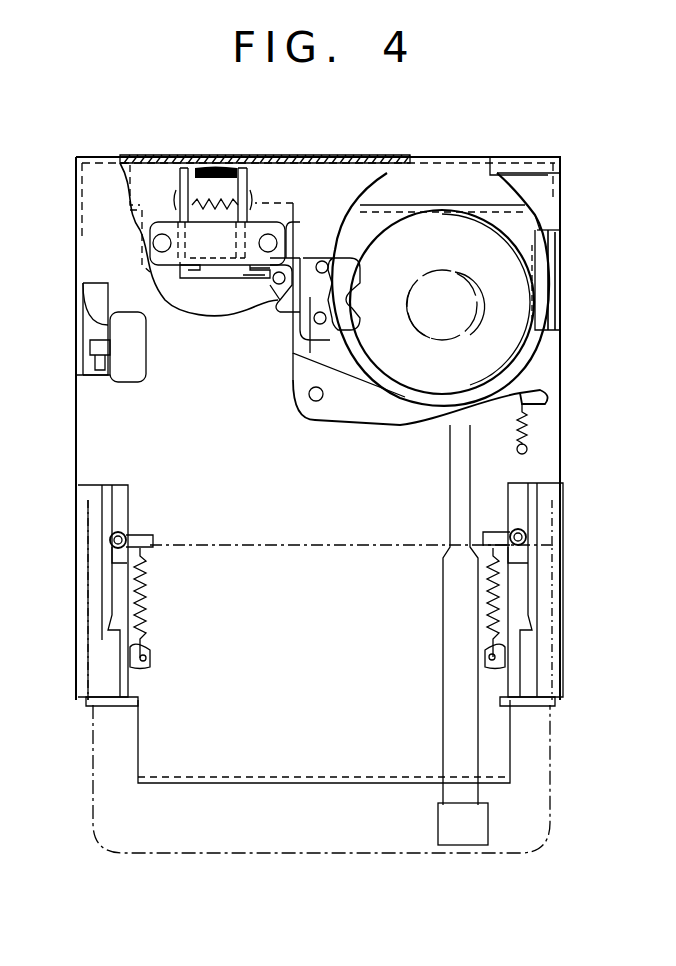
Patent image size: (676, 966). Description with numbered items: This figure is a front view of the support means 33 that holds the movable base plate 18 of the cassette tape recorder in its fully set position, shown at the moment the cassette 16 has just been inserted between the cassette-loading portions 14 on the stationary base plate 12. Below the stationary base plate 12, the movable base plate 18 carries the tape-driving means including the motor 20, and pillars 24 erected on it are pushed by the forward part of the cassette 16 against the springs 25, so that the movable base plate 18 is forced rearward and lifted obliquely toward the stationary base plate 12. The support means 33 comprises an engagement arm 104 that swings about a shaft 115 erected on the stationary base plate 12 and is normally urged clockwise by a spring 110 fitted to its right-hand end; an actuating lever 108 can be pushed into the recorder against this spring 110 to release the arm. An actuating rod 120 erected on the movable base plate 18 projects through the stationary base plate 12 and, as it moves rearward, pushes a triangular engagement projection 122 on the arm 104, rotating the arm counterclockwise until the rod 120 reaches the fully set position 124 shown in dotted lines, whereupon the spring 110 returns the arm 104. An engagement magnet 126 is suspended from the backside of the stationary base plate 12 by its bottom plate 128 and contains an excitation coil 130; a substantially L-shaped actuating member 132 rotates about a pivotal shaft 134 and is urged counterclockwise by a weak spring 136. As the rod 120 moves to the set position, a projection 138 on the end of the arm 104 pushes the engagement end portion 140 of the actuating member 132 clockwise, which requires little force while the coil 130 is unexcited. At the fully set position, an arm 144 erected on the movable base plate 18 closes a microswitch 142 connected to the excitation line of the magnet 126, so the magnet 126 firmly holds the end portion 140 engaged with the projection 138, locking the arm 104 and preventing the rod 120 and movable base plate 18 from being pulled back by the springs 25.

The stationary base plate 12 is at (556, 385).
The cassette-loading portions 14 is at (85, 603).
The cassette 16 is at (552, 790).
The movable base plate 18 is at (526, 222).
The motor 20 is at (518, 275).
The pillars 24 is at (125, 534).
The springs 25 is at (142, 603).
The support means 33 is at (360, 178).
The engagement arm 104 is at (360, 418).
The actuating lever 108 is at (466, 838).
The spring 110 is at (525, 424).
The shaft 115 is at (300, 396).
The actuating rod 120 is at (325, 312).
The triangular engagement projection 122 is at (322, 290).
The fully set position 124 is at (322, 268).
The engagement magnet 126 is at (298, 178).
The bottom plate 128 is at (158, 230).
The excitation coil 130 is at (216, 170).
The actuating member 132 is at (252, 192).
The pivotal shaft 134 is at (240, 282).
The spring 136 is at (185, 195).
The projection 138 is at (282, 258).
The engagement end portion 140 is at (296, 297).
The microswitch 142 is at (145, 378).
The arm 144 is at (88, 355).